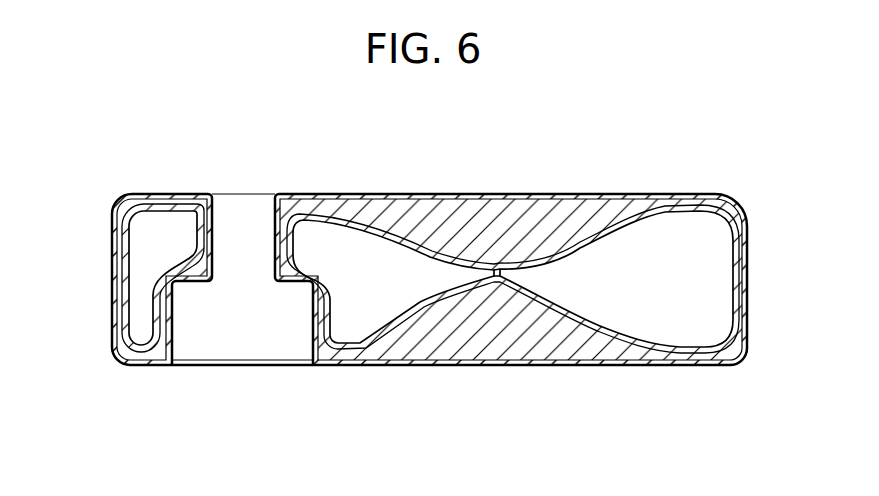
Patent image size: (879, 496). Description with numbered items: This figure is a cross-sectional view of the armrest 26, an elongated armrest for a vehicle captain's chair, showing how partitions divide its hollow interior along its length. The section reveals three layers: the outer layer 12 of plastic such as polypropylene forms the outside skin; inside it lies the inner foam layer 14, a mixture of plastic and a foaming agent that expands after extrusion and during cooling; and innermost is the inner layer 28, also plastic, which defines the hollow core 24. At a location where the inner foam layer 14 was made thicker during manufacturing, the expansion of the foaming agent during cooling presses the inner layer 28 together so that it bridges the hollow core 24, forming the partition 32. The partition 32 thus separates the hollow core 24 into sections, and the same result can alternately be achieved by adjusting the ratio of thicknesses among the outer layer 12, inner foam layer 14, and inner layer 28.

The outer layer 12 is at (121, 213).
The inner foam layer 14 is at (160, 208).
The hollow core 24 is at (145, 256).
The armrest 26 is at (736, 190).
The inner layer 28 is at (127, 298).
The partition 32 is at (492, 277).